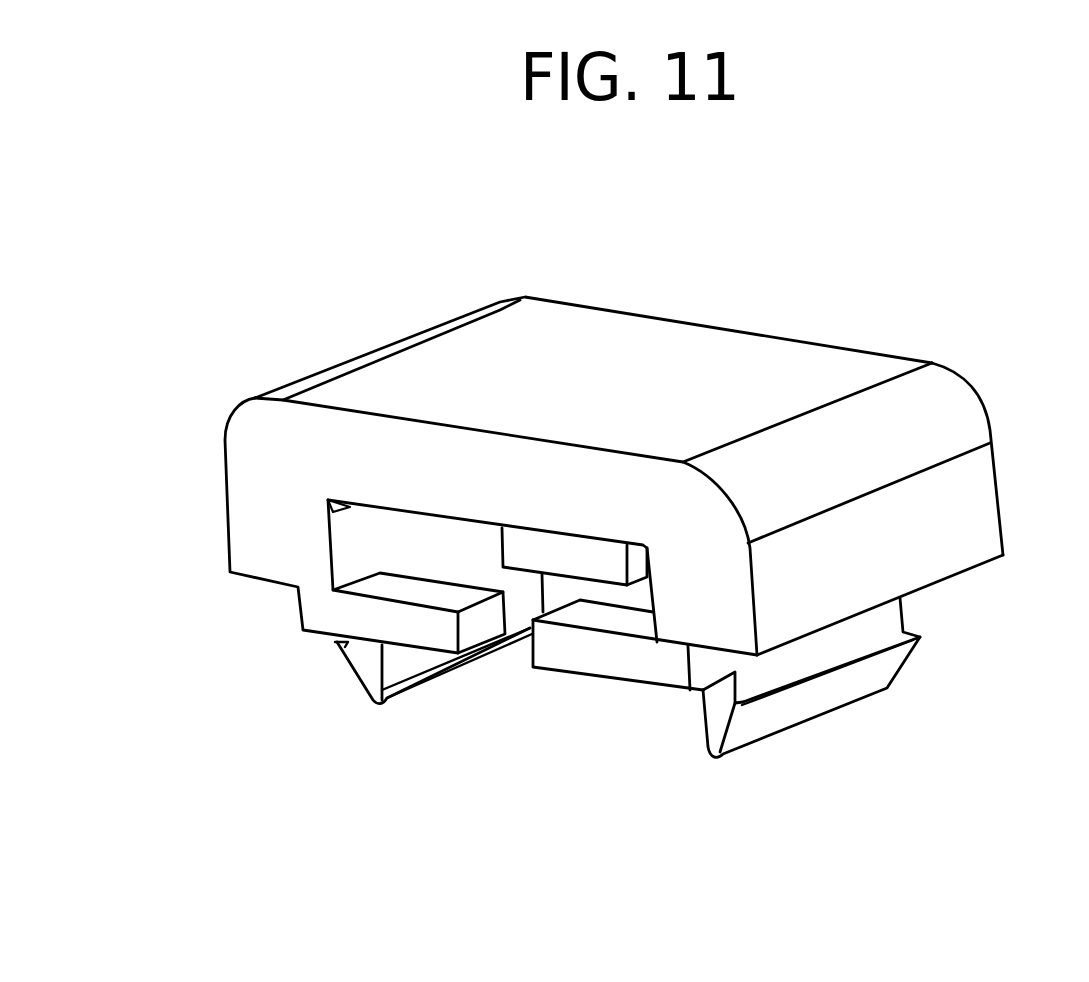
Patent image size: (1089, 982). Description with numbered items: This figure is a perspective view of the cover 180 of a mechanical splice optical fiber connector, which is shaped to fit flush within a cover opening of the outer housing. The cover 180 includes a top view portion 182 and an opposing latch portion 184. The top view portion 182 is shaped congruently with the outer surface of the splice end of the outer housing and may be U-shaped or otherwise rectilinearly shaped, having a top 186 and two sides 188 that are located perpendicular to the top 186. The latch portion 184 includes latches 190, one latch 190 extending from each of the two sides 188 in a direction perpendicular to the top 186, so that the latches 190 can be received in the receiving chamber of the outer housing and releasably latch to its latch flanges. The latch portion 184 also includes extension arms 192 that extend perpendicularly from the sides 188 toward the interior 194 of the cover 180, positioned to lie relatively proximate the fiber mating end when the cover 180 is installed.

The cover 180 is at (270, 222).
The top view portion 182 is at (587, 333).
The latch portion 184 is at (923, 614).
The top 186 is at (817, 340).
The sides 188 is at (225, 503).
The latches 190 is at (367, 682).
The extension arms 192 is at (367, 612).
The interior 194 is at (523, 605).